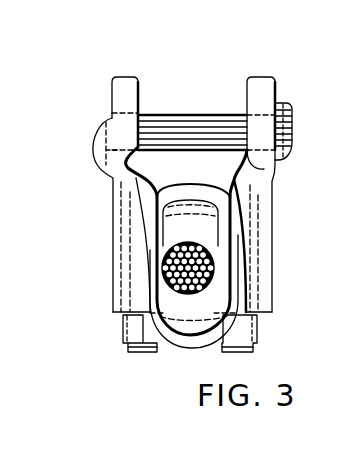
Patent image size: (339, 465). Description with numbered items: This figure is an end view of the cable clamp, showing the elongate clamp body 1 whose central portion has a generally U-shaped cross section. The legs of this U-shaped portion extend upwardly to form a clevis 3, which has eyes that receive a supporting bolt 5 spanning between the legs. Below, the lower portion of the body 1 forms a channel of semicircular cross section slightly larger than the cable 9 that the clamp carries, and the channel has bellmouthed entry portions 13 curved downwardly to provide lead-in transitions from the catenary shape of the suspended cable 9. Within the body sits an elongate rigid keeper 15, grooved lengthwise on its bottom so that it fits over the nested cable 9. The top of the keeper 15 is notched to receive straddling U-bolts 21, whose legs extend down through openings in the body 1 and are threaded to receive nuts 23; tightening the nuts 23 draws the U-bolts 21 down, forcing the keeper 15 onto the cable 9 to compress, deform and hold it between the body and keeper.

The clamp body 1 is at (96, 222).
The clevis 3 is at (124, 77).
The supporting bolt 5 is at (196, 100).
The cable 9 is at (214, 278).
The bellmouthed entry portions 13 is at (187, 348).
The keeper 15 is at (163, 203).
The U-bolts 21 is at (180, 186).
The nuts 23 is at (117, 332).